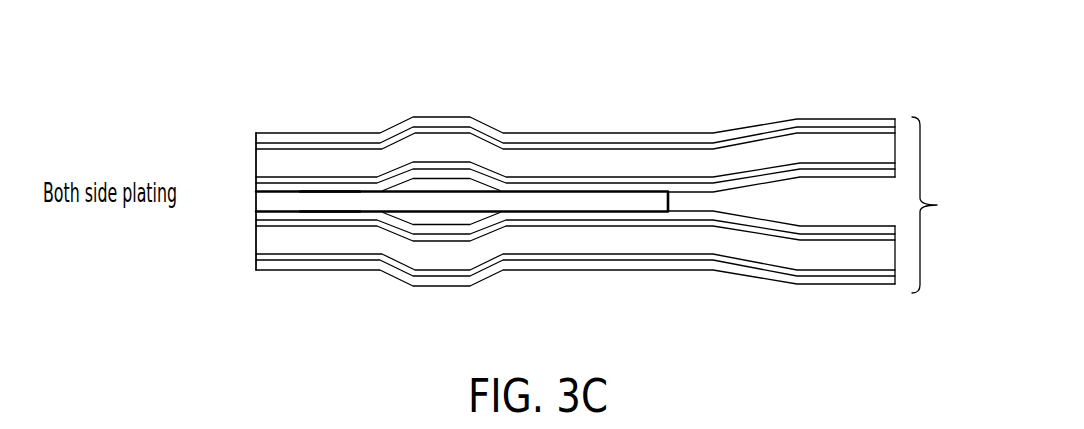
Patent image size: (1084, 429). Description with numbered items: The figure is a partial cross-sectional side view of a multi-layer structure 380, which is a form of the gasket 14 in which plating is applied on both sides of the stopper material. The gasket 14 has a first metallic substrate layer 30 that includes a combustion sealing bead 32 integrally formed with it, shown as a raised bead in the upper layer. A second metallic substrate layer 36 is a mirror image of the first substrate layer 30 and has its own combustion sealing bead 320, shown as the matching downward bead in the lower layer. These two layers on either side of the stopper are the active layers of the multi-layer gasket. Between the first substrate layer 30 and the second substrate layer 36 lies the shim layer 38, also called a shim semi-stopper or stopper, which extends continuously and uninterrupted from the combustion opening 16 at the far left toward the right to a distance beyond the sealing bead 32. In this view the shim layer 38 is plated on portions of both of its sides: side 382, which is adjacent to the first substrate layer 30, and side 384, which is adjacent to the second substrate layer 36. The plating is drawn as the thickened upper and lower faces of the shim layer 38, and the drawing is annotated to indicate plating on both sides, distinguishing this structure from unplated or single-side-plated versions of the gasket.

The multi-layer structure 380 is at (226, 108).
The side 382 is at (328, 190).
The side 384 is at (328, 213).
The combustion sealing bead 32 is at (446, 132).
The combustion sealing bead 320 is at (432, 286).
The first metallic substrate layer 30 is at (867, 147).
The second metallic substrate layer 36 is at (867, 257).
The shim layer 38 is at (267, 200).
The combustion opening 16 is at (257, 245).
The gasket 14 is at (937, 205).